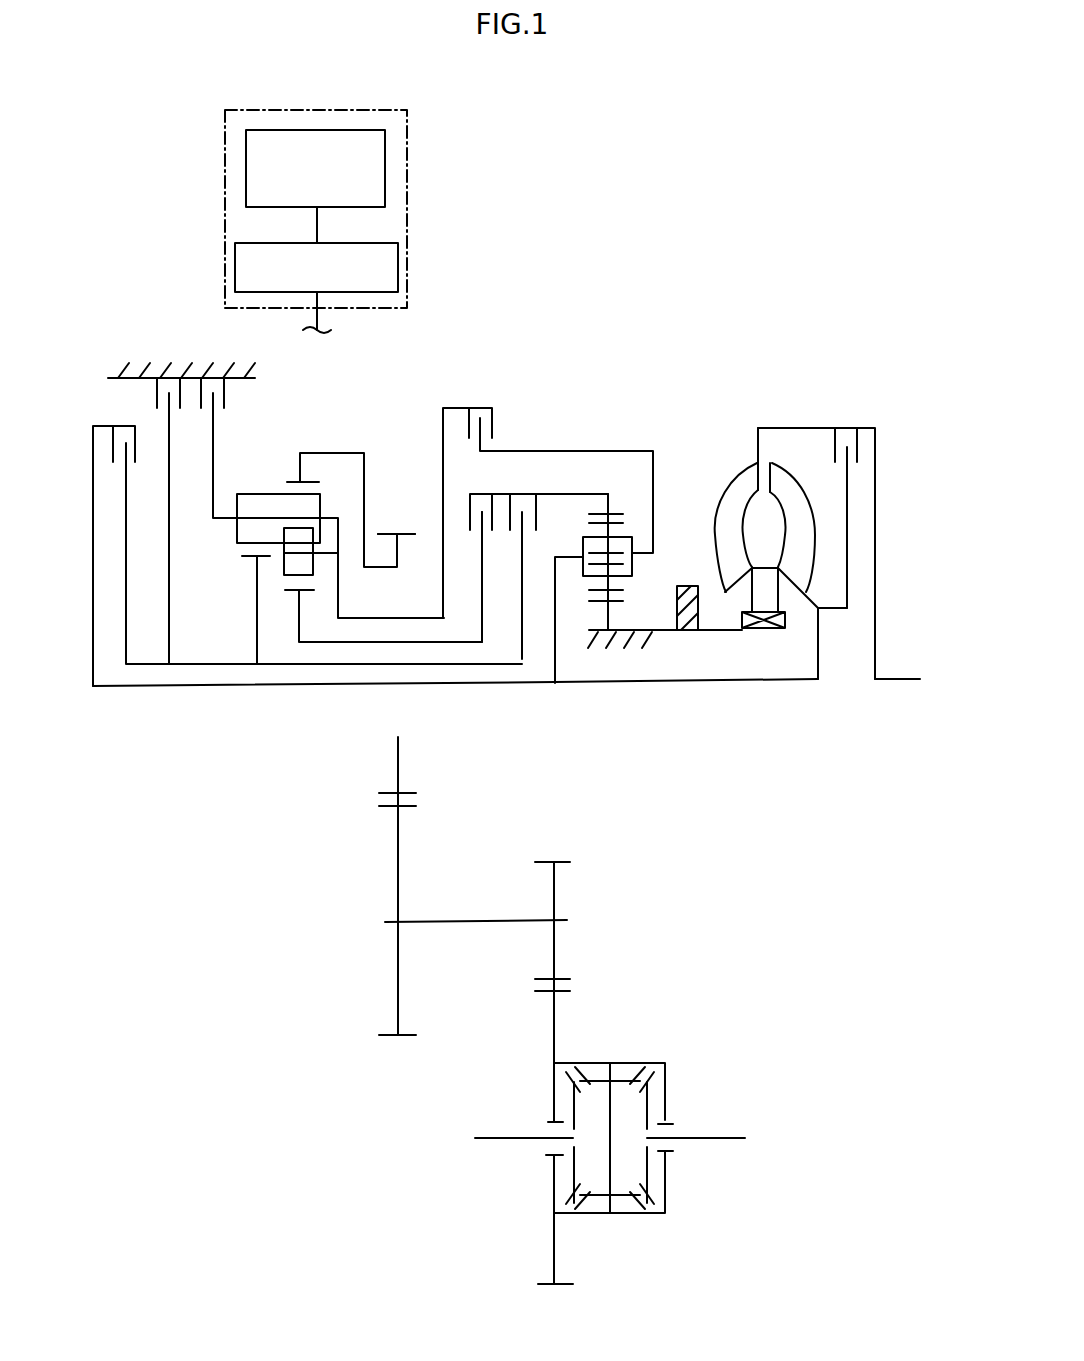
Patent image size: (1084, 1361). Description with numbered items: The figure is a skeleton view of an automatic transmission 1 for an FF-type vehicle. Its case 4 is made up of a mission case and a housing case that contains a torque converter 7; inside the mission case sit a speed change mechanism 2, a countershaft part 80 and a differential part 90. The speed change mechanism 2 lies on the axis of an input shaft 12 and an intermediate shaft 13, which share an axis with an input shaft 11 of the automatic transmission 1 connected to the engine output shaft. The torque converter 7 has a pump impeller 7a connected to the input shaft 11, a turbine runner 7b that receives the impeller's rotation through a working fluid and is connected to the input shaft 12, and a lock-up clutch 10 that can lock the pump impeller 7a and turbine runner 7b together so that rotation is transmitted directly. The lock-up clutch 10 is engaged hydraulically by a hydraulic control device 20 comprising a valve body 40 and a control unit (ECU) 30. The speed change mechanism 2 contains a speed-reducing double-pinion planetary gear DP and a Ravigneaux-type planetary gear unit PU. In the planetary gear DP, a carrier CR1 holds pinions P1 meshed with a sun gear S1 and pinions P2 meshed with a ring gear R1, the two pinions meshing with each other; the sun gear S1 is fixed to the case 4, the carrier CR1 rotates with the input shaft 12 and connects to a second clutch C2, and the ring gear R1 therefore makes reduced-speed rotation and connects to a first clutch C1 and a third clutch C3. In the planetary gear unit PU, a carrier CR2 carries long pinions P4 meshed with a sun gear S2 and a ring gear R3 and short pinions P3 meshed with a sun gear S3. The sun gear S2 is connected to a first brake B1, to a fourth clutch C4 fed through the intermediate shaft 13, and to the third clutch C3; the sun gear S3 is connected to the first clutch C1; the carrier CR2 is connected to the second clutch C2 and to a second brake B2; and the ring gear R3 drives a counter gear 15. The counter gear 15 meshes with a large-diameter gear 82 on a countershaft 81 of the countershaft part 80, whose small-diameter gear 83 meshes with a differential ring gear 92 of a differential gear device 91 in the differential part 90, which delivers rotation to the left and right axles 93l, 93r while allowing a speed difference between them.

The automatic transmission 1 is at (475, 241).
The speed change mechanism 2 is at (543, 288).
The case 4 is at (250, 378).
The torque converter 7 is at (773, 527).
The pump impeller 7a is at (741, 488).
The turbine runner 7b is at (786, 484).
The lock-up clutch 10 is at (857, 443).
The input shaft 11 is at (893, 680).
The input shaft 12 is at (705, 681).
The intermediate shaft 13 is at (246, 687).
The counter gear 15 is at (409, 532).
The hydraulic control device 20 is at (289, 106).
The control unit (ECU) 30 is at (246, 178).
The valve body 40 is at (235, 268).
The countershaft part 80 is at (555, 929).
The countershaft 81 is at (460, 922).
The large-diameter gear 82 is at (406, 806).
The small-diameter gear 83 is at (566, 866).
The differential part 90 is at (624, 1142).
The differential gear device 91 is at (652, 1058).
The differential ring gear 92 is at (566, 994).
The right axle 93r is at (508, 1140).
The left axle 93l is at (714, 1140).
The first brake B1 is at (167, 499).
The second brake B2 is at (216, 427).
The first clutch C1 is at (535, 556).
The second clutch C2 is at (548, 499).
The third clutch C3 is at (521, 564).
The fourth clutch C4 is at (307, 543).
The planetary gear unit PU is at (255, 462).
The planetary gear DP is at (590, 466).
The ring gear R1 is at (610, 512).
The pinion P1 is at (589, 590).
The pinion P2 is at (590, 526).
The sun gear S1 is at (618, 603).
The carrier CR1 is at (632, 568).
The ring gear R3 is at (304, 482).
The short pinion P3 is at (313, 565).
The long pinion P4 is at (233, 530).
The sun gear S2 is at (249, 558).
The sun gear S3 is at (287, 593).
The carrier CR2 is at (345, 540).